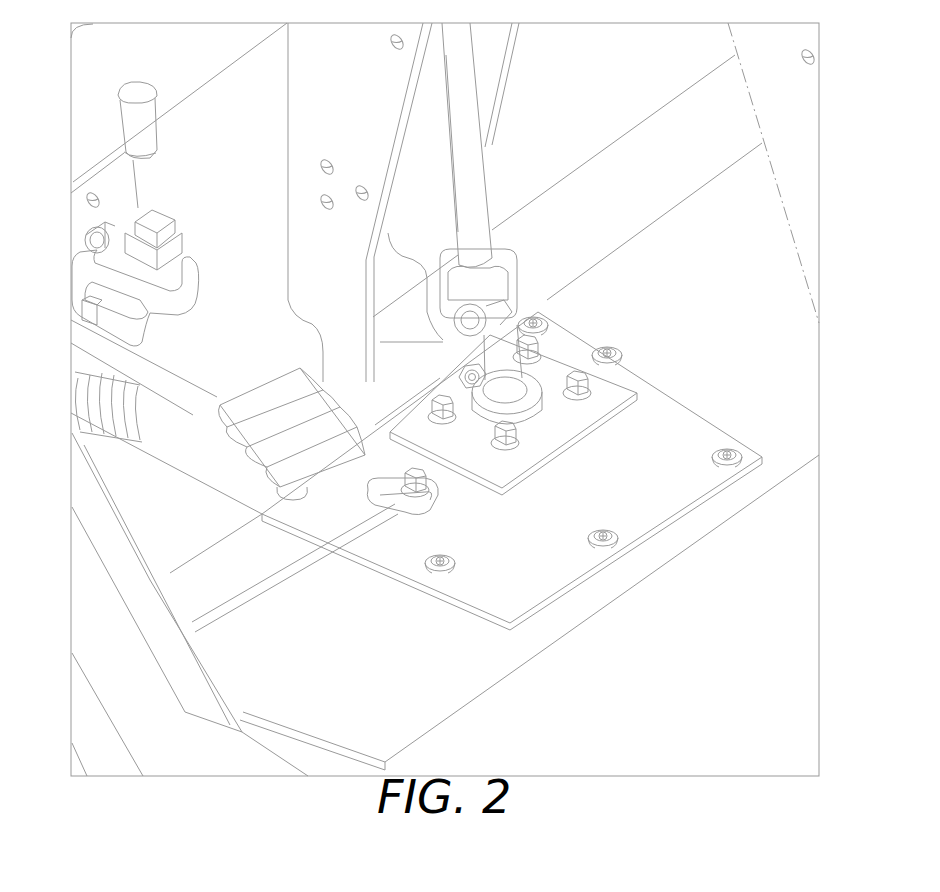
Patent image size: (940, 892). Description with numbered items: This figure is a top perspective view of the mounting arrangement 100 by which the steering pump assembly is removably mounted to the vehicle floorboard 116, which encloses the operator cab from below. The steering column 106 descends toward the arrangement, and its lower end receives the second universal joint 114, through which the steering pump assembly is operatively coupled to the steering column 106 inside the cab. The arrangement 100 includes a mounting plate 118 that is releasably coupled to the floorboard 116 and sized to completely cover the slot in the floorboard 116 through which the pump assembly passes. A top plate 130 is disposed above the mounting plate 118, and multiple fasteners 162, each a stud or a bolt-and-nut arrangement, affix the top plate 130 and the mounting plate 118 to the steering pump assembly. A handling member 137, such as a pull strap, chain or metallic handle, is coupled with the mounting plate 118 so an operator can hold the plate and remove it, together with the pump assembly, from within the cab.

The mounting arrangement 100 is at (565, 259).
The steering column 106 is at (478, 204).
The second universal joint 114 is at (540, 271).
The floorboard 116 is at (797, 470).
The mounting plate 118 is at (695, 505).
The top plate 130 is at (617, 392).
The handling member 137 is at (287, 569).
The fasteners 162 is at (572, 383).